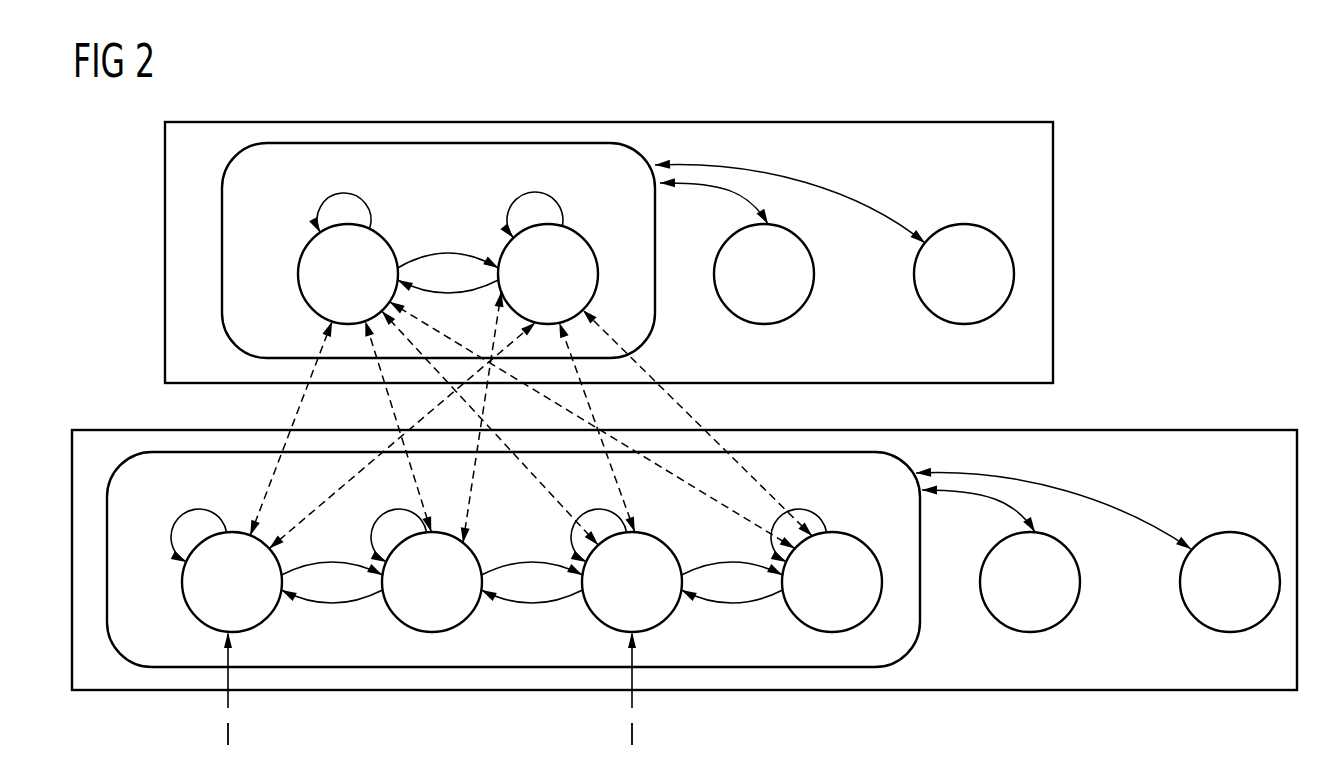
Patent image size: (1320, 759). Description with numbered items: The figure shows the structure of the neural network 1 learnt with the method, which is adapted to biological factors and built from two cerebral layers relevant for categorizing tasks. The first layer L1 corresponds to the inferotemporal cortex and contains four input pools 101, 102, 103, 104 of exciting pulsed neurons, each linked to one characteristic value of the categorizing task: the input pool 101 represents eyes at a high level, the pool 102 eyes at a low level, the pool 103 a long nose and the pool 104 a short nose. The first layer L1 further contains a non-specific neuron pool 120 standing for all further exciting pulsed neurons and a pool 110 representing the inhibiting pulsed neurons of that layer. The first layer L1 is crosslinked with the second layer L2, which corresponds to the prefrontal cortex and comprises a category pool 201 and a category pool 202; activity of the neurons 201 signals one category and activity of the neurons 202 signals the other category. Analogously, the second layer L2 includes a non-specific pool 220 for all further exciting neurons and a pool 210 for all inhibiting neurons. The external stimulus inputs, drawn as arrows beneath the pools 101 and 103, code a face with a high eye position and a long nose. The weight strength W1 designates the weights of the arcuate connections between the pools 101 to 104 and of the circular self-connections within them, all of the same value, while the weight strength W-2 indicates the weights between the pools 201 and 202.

The neural network 1 is at (1114, 123).
The first layer L1 is at (1188, 428).
The second layer L2 is at (835, 120).
The input pool 101 is at (190, 593).
The input pool 102 is at (397, 612).
The input pool 103 is at (655, 613).
The input pool 104 is at (848, 547).
The inhibiting neuron pool 110 is at (1237, 545).
The non-specific neuron pool 120 is at (1055, 613).
The category pool 201 is at (305, 278).
The category pool 202 is at (577, 251).
The inhibiting neuron pool 210 is at (973, 240).
The non-specific pool 220 is at (788, 305).
The first-layer weight strength W1 is at (531, 612).
The second-layer inter-pool weight strength W-2 is at (438, 264).